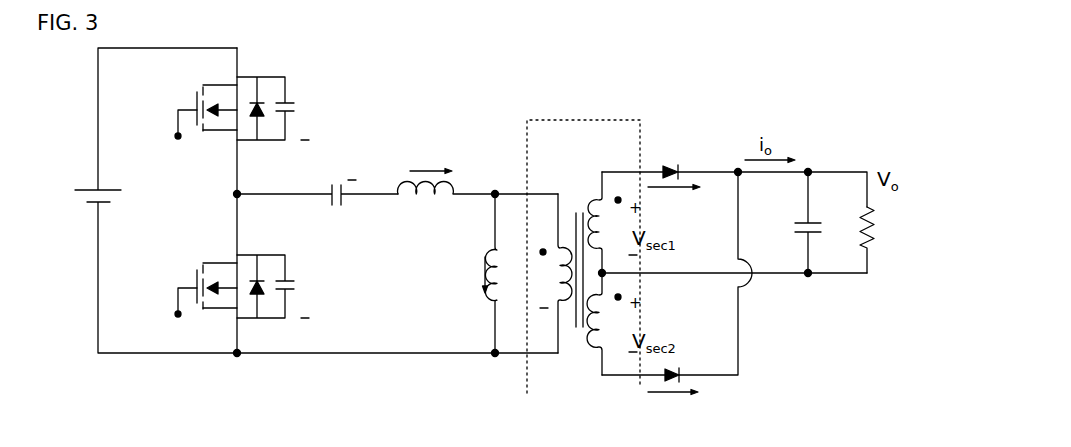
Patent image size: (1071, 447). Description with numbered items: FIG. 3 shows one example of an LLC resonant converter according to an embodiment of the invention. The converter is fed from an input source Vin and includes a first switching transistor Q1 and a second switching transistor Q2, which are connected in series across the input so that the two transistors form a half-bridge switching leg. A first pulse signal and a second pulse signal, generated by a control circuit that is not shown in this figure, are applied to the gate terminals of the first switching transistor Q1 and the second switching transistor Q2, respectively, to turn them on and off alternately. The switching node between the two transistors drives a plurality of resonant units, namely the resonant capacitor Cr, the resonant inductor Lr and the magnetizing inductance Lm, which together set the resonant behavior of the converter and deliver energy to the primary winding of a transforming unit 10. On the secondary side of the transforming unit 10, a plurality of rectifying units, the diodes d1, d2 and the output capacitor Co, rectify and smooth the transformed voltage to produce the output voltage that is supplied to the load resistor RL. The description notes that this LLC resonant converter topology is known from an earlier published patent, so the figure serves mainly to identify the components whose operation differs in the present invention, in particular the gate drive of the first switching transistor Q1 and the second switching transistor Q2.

The transforming unit 10 is at (583, 118).
The first switching transistor Q1 is at (245, 117).
The second switching transistor Q2 is at (245, 295).
The rectifying unit d1 is at (670, 177).
The rectifying unit d2 is at (677, 301).
The resonant unit Cr is at (317, 193).
The resonant unit Lr is at (478, 187).
The resonant unit Lm is at (467, 274).
The rectifying unit Co is at (794, 222).
The load resistor RL is at (850, 233).
The input voltage source Vin is at (297, 200).